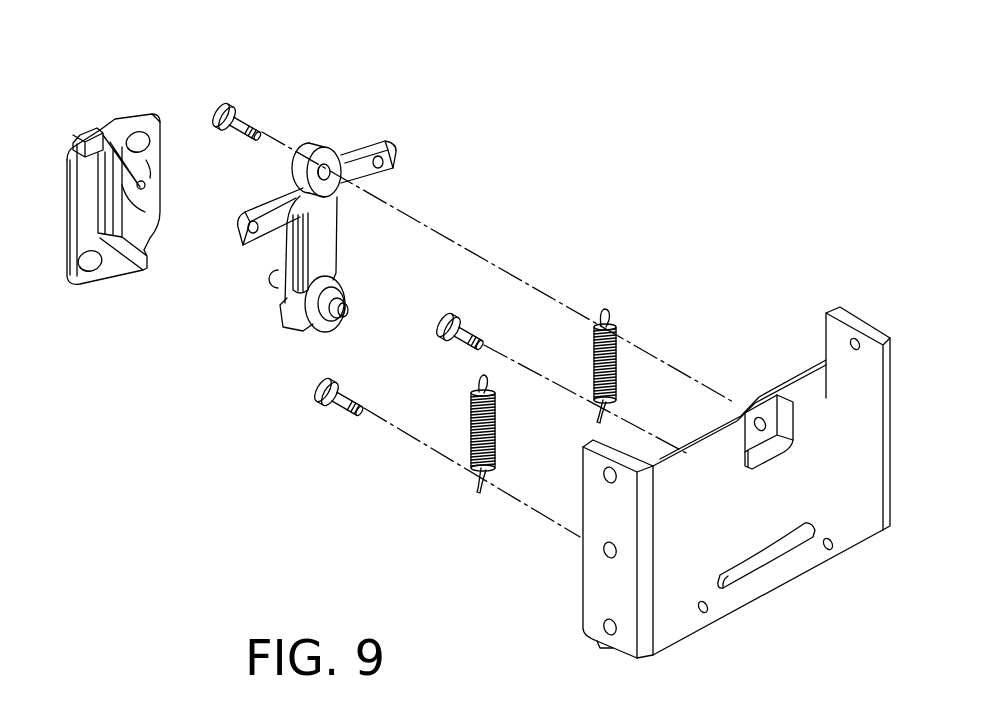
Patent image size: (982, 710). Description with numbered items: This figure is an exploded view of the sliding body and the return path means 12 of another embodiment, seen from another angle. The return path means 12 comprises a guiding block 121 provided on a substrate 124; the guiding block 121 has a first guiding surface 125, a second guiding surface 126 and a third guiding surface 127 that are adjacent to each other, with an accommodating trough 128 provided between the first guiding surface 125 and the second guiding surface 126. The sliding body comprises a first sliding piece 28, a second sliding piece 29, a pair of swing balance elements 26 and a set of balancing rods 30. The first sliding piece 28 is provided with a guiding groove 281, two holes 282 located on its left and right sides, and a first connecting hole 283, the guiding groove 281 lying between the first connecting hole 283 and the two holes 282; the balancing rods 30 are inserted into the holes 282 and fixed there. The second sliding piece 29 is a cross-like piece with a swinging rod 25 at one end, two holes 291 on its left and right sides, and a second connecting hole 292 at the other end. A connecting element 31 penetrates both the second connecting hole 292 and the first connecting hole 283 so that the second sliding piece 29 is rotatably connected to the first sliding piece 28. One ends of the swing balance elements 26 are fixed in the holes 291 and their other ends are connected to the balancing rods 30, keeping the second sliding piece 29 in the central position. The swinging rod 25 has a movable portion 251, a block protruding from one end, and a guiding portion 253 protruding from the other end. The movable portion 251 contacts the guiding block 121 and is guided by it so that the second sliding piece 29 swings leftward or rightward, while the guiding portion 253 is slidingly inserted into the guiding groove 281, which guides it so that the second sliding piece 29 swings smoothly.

The return path means 12 is at (122, 117).
The guiding block 121 is at (97, 132).
The substrate 124 is at (153, 172).
The first guiding surface 125 is at (160, 152).
The second guiding surface 126 is at (122, 220).
The third guiding surface 127 is at (93, 203).
The accommodating trough 128 is at (130, 196).
The connecting element 31 is at (238, 105).
The second sliding piece 29 is at (357, 162).
The holes 291 is at (387, 165).
The second connecting hole 292 is at (325, 170).
The swinging rod 25 is at (328, 232).
The movable portion 251 is at (268, 287).
The guiding portion 253 is at (347, 320).
The balancing rods 30 is at (458, 322).
The swing balance elements 26 is at (617, 377).
The first sliding piece 28 is at (736, 489).
The guiding groove 281 is at (763, 560).
The holes 282 is at (832, 548).
The first connecting hole 283 is at (759, 420).